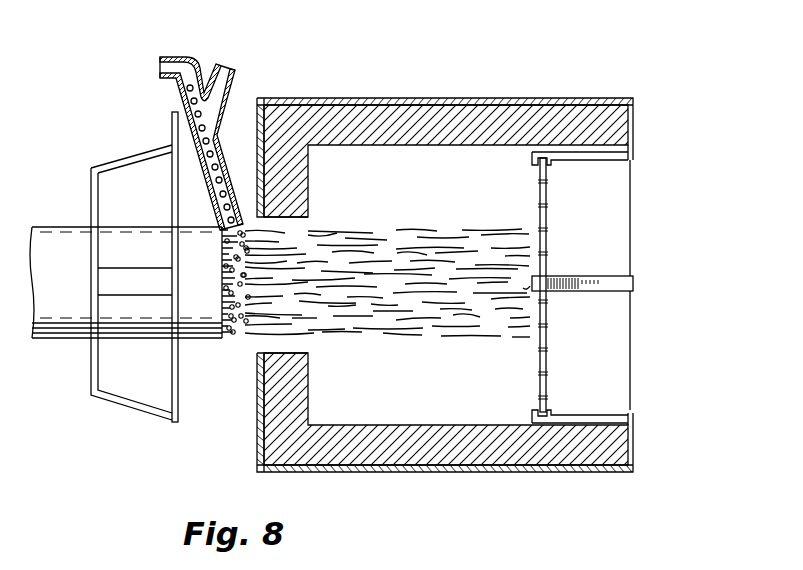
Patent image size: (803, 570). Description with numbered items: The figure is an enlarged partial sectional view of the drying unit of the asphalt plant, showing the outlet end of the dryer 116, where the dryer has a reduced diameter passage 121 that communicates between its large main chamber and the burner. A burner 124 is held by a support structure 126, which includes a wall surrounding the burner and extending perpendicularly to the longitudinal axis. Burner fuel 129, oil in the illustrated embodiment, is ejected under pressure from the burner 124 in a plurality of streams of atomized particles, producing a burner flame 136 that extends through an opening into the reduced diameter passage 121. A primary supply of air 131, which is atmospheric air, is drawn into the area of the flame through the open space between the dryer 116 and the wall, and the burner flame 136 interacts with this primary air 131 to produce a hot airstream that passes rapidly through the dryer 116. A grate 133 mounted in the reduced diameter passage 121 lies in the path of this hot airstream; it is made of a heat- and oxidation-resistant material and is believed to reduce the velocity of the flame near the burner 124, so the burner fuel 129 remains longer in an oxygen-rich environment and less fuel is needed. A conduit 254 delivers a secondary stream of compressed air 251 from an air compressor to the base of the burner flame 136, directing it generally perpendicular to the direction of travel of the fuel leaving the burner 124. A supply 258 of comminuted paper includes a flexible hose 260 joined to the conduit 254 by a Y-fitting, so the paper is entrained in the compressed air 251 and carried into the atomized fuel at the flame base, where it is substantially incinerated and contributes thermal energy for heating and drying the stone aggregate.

The dryer 116 is at (478, 99).
The reduced diameter passage 121 is at (393, 440).
The burner 124 is at (70, 227).
The support structure 126 is at (172, 116).
The burner fuel 129 is at (234, 335).
The primary supply of air 131 is at (232, 440).
The grate 133 is at (545, 238).
The burner flame 136 is at (300, 250).
The secondary stream of compressed air 251 is at (233, 80).
The conduit 254 is at (213, 66).
The supply of comminuted paper 258 is at (183, 57).
The flexible hose 260 is at (160, 58).